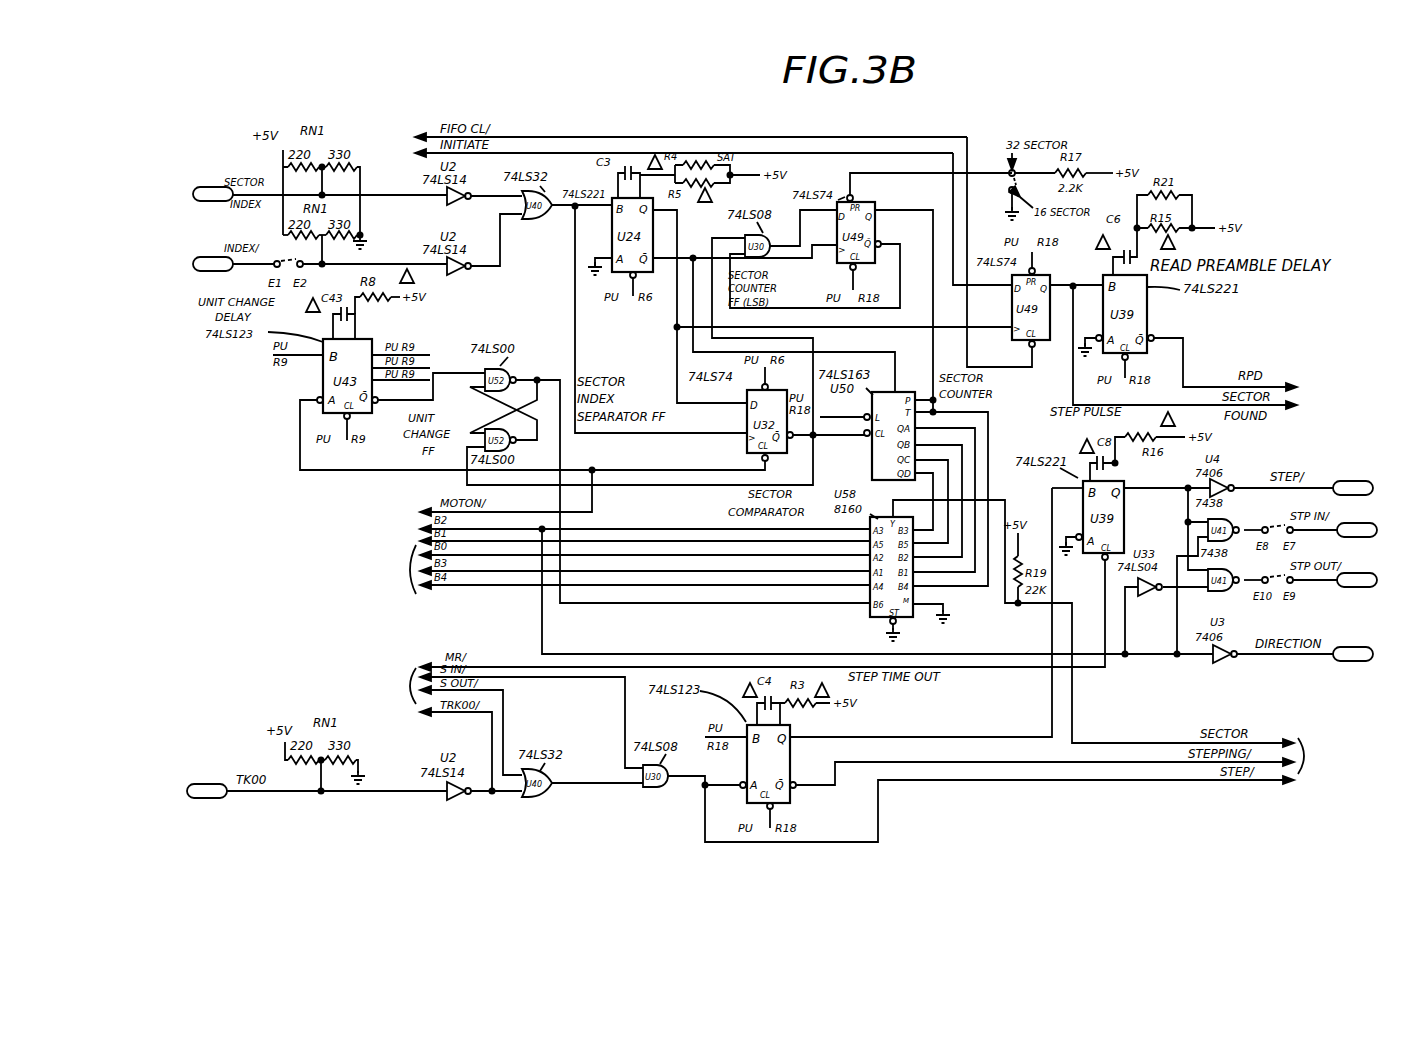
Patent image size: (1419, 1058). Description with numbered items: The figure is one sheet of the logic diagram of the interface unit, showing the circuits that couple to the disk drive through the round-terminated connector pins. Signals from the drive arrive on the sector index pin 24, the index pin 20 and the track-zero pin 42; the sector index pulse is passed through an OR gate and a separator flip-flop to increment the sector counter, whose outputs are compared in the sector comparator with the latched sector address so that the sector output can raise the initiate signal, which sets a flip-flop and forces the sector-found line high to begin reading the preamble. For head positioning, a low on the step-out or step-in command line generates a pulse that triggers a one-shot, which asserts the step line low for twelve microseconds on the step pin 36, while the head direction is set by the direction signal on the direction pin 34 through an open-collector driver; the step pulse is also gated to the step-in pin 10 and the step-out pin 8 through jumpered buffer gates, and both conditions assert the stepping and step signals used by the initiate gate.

The J1 connector pin 24 (SECTOR INDEX) 24 is at (196, 194).
The J1 connector pin 20 (INDEX/) 20 is at (196, 264).
The J1 connector pin 42 (TK00) 42 is at (190, 791).
The J1 pin 36 (STEP/) 36 is at (1311, 488).
The J1 connector pin 10 (STP IN/) 10 is at (1317, 530).
The J1 connector pin 8 (STP OUT/) 8 is at (1317, 580).
The J1 pin 34 (DIRECTION) 34 is at (1313, 654).